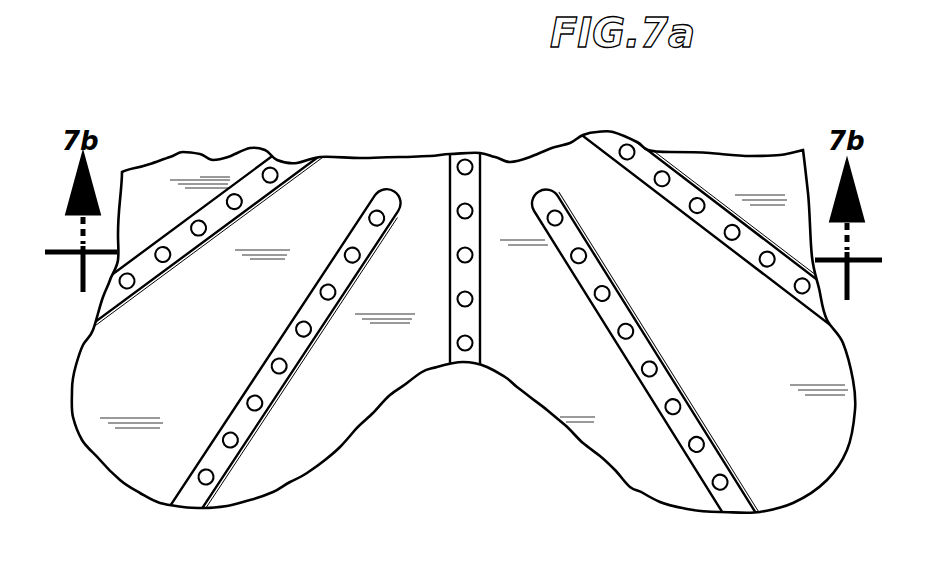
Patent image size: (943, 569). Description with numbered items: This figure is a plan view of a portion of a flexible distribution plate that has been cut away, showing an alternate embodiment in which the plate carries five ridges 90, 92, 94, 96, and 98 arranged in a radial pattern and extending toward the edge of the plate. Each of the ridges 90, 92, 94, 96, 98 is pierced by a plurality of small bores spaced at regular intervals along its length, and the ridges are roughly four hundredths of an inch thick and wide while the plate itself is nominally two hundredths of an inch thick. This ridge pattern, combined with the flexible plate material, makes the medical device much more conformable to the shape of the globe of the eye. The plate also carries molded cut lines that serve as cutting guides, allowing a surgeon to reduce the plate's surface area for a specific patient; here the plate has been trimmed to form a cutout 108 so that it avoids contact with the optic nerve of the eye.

The ridge 90 is at (187, 247).
The ridge 92 is at (297, 350).
The ridge 94 is at (468, 270).
The ridge 96 is at (660, 388).
The ridge 98 is at (745, 245).
The cutout 108 is at (403, 425).